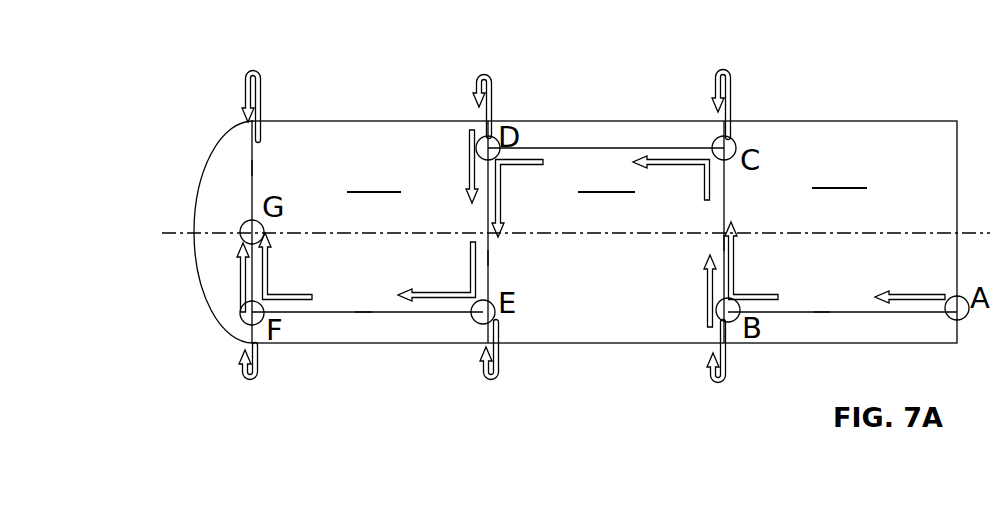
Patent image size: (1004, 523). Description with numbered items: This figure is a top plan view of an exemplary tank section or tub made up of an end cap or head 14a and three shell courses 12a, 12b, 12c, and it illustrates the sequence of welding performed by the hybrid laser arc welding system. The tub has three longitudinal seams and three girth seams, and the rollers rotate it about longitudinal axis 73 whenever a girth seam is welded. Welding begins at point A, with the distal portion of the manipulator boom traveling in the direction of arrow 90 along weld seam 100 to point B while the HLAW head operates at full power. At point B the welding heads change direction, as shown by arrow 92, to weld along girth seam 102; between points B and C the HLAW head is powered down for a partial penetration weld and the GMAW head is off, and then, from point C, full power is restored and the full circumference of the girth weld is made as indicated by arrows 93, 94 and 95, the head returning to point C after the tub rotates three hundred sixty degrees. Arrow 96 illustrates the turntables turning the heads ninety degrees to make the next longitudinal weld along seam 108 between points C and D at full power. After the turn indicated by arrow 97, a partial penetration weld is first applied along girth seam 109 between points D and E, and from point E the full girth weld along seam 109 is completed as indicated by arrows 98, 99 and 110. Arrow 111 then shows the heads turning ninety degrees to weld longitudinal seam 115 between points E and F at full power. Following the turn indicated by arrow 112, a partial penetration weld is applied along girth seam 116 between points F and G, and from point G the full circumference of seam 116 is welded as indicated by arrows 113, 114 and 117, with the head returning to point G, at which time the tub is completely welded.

The shell course 12a is at (374, 177).
The shell course 12b is at (606, 177).
The shell course 12c is at (839, 173).
The end cap or head 14a is at (198, 188).
The longitudinal axis 73 is at (168, 233).
The arrow 90 is at (912, 294).
The arrow 92 is at (736, 286).
The arrow 93 is at (732, 90).
The arrow 94 is at (728, 353).
The arrow 95 is at (693, 295).
The arrow 96 is at (671, 178).
The arrow 97 is at (517, 199).
The arrow 98 is at (500, 352).
The arrow 99 is at (492, 90).
The weld seam 100 is at (822, 310).
The seam 102 is at (723, 243).
The seam 108 is at (593, 148).
The seam 109 is at (488, 258).
The arrow 110 is at (448, 166).
The arrow 111 is at (438, 271).
The arrow 112 is at (270, 263).
The arrow 113 is at (245, 112).
The arrow 114 is at (238, 355).
The seam 115 is at (363, 313).
The seam 116 is at (252, 168).
The arrow 117 is at (242, 290).